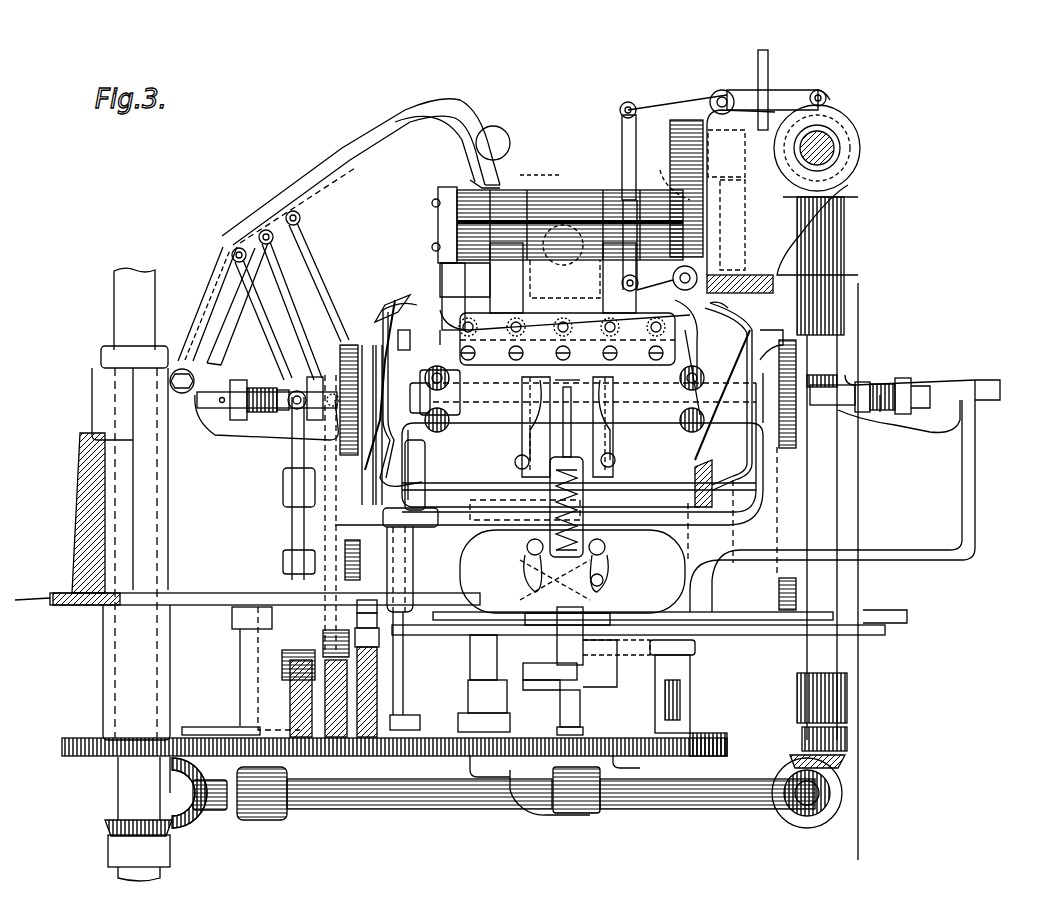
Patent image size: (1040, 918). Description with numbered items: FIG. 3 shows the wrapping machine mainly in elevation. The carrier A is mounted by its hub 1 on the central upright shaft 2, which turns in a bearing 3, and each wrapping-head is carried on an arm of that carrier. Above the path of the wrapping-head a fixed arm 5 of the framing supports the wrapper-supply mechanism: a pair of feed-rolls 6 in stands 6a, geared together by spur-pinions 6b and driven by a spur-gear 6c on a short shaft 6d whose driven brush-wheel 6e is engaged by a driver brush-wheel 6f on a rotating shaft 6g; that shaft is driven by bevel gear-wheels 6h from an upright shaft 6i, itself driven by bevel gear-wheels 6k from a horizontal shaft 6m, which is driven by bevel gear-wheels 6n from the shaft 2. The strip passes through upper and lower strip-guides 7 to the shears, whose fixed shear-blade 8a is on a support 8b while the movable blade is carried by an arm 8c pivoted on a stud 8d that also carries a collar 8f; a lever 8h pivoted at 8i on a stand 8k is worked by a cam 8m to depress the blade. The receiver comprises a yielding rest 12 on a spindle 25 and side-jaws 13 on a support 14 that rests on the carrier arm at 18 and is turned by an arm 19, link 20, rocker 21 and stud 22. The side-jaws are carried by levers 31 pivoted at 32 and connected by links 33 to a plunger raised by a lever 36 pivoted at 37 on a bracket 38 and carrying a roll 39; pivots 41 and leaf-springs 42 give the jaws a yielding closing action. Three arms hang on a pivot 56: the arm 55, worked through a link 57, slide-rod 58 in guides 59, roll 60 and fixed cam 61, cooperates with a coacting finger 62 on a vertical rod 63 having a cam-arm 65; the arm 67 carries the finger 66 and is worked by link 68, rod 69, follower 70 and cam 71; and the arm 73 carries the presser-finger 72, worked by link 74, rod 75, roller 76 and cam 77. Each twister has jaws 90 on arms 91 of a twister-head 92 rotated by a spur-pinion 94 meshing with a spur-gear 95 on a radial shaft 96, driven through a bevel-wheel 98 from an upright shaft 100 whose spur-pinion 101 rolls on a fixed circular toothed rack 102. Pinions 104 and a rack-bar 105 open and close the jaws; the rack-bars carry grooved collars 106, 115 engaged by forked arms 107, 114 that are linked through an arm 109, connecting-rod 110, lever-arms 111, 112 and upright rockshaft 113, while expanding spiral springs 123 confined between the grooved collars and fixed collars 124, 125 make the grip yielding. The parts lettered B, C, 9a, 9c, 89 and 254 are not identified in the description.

The hub 1 is at (100, 358).
The upright shaft 2 is at (113, 312).
The bearing 3 is at (103, 654).
The carrier A is at (78, 468).
The housing B is at (549, 492).
The roller unit C is at (540, 158).
The fixed arm 5 is at (858, 315).
The feed-rolls 6 is at (603, 190).
The stands 6a is at (440, 207).
The spur-pinions 6b is at (680, 190).
The spur-gear 6c is at (672, 128).
The short shaft 6d is at (735, 112).
The driven brush-wheel 6e is at (768, 70).
The driver brush-wheel 6f is at (840, 120).
The rotating shaft 6g is at (835, 148).
The bevel gear-wheels 6h is at (855, 122).
The upright shaft 6i is at (845, 345).
The bevel gear-wheels 6k is at (855, 760).
The horizontal shaft 6m is at (650, 820).
The bevel gear-wheels 6n is at (108, 830).
The strip-guides 7 is at (563, 278).
The shear-blade 8a is at (445, 345).
The support 8b is at (440, 350).
The arm 8c is at (568, 333).
The stud 8d is at (675, 290).
The collar 8f is at (720, 270).
The lever 8h is at (648, 100).
The pivot 8i is at (720, 96).
The supporting stand 8k is at (812, 95).
The cam 8m is at (823, 92).
The block 9a is at (470, 290).
The cam 9c is at (565, 261).
The rest 12 is at (573, 418).
The side-jaws or pressers 13 is at (522, 425).
The support 14 is at (530, 578).
The flange seat 18 is at (520, 615).
The arm 19 is at (605, 652).
The link 20 is at (556, 690).
The rocker 21 is at (468, 685).
The stud 22 is at (470, 660).
The spindle 25 is at (560, 443).
The levers 31 is at (515, 490).
The pivots 32 is at (527, 547).
The links 33 is at (616, 566).
The lever 36 is at (560, 725).
The pivot 37 is at (595, 678).
The bracket 38 is at (545, 663).
The anti-friction roll 39 is at (560, 760).
The pivots 41 is at (586, 420).
The leaf-springs 42 is at (515, 460).
The arm 55 is at (308, 185).
The pivot 56 is at (180, 370).
The link 57 is at (262, 338).
The slide-rod 58 is at (292, 444).
The guides 59 is at (283, 488).
The anti-friction roll 60 is at (292, 575).
The fixed cam 61 is at (290, 710).
The coacting finger 62 is at (594, 385).
The vertical rod 63 is at (395, 462).
The arm 65 is at (410, 718).
The finger 66 is at (508, 140).
The arm 67 is at (262, 314).
The link 68 is at (320, 300).
The rod 69 is at (378, 640).
The follower 70 is at (380, 660).
The cam 71 is at (377, 680).
The presser-finger 72 is at (498, 182).
The arm 73 is at (425, 115).
The link 74 is at (285, 290).
The rod 75 is at (327, 512).
The anti-friction roller 76 is at (282, 655).
The fixed cam 77 is at (330, 756).
The link 89 is at (623, 170).
The jaws 90 is at (760, 304).
The arms 91 is at (405, 445).
The twister-head 92 is at (462, 395).
The spur-pinion 94 is at (380, 318).
The spur-gear 95 is at (779, 600).
The radial shaft 96 is at (497, 500).
The bevel-wheel 98 is at (693, 472).
The upright shaft 100 is at (695, 698).
The spur-pinion 101 is at (727, 745).
The circular toothed rack 102 is at (660, 764).
The pinions 104 is at (680, 378).
The rack-bar 105 is at (412, 385).
The grooved collar 106 is at (915, 420).
The forked arm 107 is at (912, 378).
The arm 109 is at (893, 625).
The connecting-rod 110 is at (775, 640).
The lever-arm 111 is at (235, 640).
The cam-operated lever-arm 112 is at (225, 727).
The upright rockshaft 113 is at (245, 656).
The forked arm 114 is at (297, 392).
The grooved collar 115 is at (236, 384).
The expanding spiral springs 123 is at (282, 412).
The fixed collars 124 is at (265, 393).
The fixed collars 125 is at (220, 430).
The lug 254 is at (481, 183).